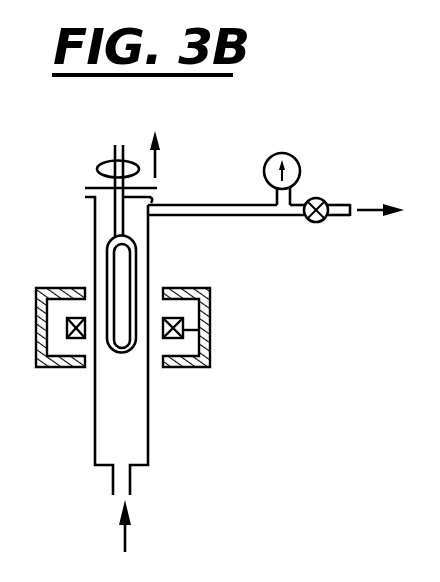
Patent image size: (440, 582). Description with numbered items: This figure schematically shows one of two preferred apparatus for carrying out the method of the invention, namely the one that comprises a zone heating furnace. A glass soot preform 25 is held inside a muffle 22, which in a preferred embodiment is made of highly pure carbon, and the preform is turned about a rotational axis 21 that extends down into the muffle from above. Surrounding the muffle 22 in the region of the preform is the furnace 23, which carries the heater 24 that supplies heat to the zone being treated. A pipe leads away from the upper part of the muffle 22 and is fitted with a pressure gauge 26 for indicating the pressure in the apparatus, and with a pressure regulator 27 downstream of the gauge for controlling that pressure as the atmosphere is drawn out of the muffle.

The rotational axis 21 is at (152, 200).
The muffle 22 is at (150, 229).
The furnace 23 is at (210, 305).
The heater 24 is at (205, 345).
The glass soot preform 25 is at (94, 262).
The pressure gauge 26 is at (298, 160).
The pressure regulator 27 is at (320, 222).